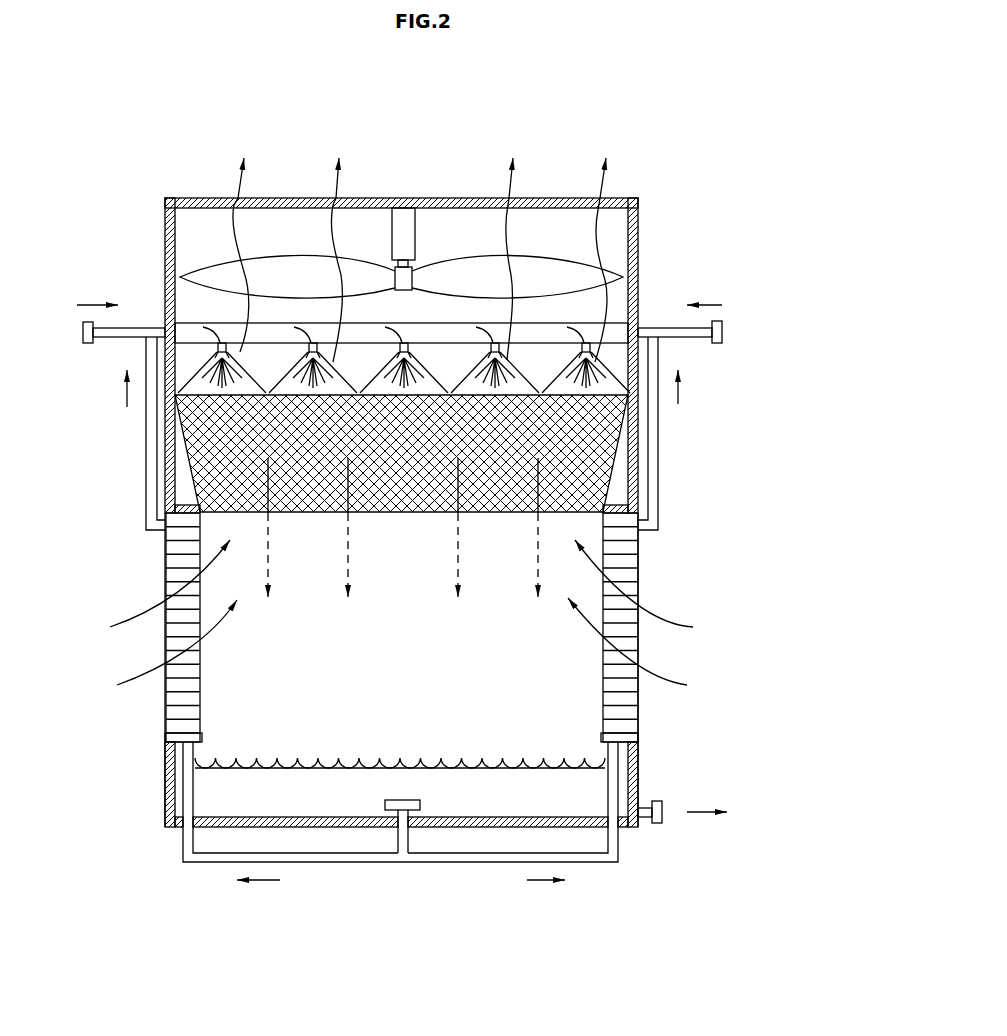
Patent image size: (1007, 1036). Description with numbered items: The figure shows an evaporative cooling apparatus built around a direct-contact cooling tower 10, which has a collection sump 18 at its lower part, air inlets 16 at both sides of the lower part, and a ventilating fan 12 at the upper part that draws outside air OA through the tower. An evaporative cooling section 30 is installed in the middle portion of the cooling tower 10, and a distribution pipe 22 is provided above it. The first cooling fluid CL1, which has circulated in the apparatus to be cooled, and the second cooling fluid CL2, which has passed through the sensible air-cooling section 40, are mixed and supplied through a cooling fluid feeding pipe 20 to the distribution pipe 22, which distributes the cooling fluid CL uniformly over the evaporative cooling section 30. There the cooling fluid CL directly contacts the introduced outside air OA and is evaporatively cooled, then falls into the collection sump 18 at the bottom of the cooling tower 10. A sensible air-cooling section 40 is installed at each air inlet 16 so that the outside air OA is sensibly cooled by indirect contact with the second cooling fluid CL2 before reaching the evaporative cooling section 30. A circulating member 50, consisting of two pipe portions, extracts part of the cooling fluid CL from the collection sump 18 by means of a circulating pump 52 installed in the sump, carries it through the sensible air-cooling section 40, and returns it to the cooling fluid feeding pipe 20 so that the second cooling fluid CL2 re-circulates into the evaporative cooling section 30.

The cooling tower 10 is at (566, 160).
The ventilating fan 12 is at (455, 258).
The air inlet 16 is at (172, 742).
The collection sump 18 is at (170, 790).
The cooling fluid feeding pipe 20 is at (668, 328).
The distribution pipe 22 is at (613, 327).
The evaporative cooling section 30 is at (580, 445).
The sensible air-cooling section 40 is at (163, 644).
The circulating member 50 is at (150, 460).
The circulating pump 52 is at (385, 806).
The cooling fluid CL is at (165, 562).
The first cooling fluid CL1 is at (718, 305).
The second cooling fluid CL2 is at (678, 404).
The outside air OA is at (680, 670).